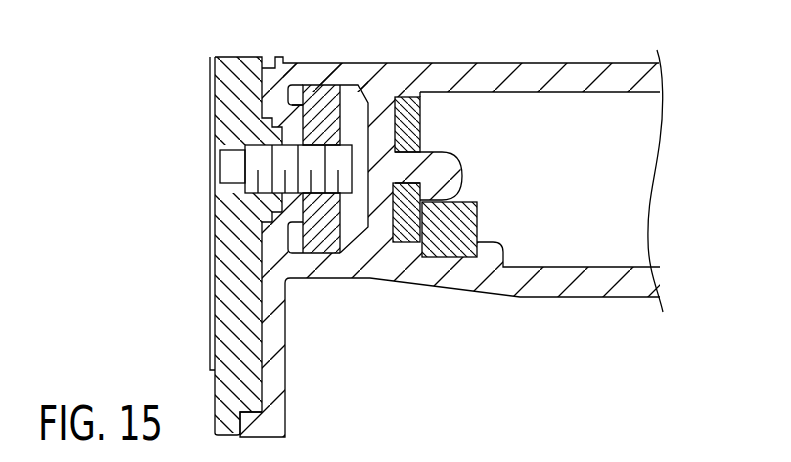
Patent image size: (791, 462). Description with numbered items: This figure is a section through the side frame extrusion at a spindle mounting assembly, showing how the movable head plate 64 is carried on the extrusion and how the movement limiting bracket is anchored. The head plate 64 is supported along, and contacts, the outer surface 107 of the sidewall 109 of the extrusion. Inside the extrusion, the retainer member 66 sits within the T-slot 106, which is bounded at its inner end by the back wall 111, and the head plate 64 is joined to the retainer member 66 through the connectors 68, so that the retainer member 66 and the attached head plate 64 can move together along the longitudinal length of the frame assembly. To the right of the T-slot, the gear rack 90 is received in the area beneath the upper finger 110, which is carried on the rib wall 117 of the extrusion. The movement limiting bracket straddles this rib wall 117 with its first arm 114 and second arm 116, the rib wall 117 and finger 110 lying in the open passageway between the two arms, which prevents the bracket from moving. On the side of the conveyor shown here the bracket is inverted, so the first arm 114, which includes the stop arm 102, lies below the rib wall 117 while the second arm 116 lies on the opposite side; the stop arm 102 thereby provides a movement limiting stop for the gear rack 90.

The head plate 64 is at (230, 90).
The retainer member 66 is at (312, 95).
The connectors 68 is at (222, 206).
The gear rack 90 is at (448, 247).
The stop arm 102 is at (503, 224).
The T-slot 106 is at (356, 112).
The outer surface 107 is at (272, 312).
The sidewall 109 is at (277, 383).
The upper finger 110 is at (455, 177).
The back wall 111 is at (386, 136).
The first arm 114 is at (403, 232).
The second arm 116 is at (420, 140).
The rib wall 117 is at (410, 167).